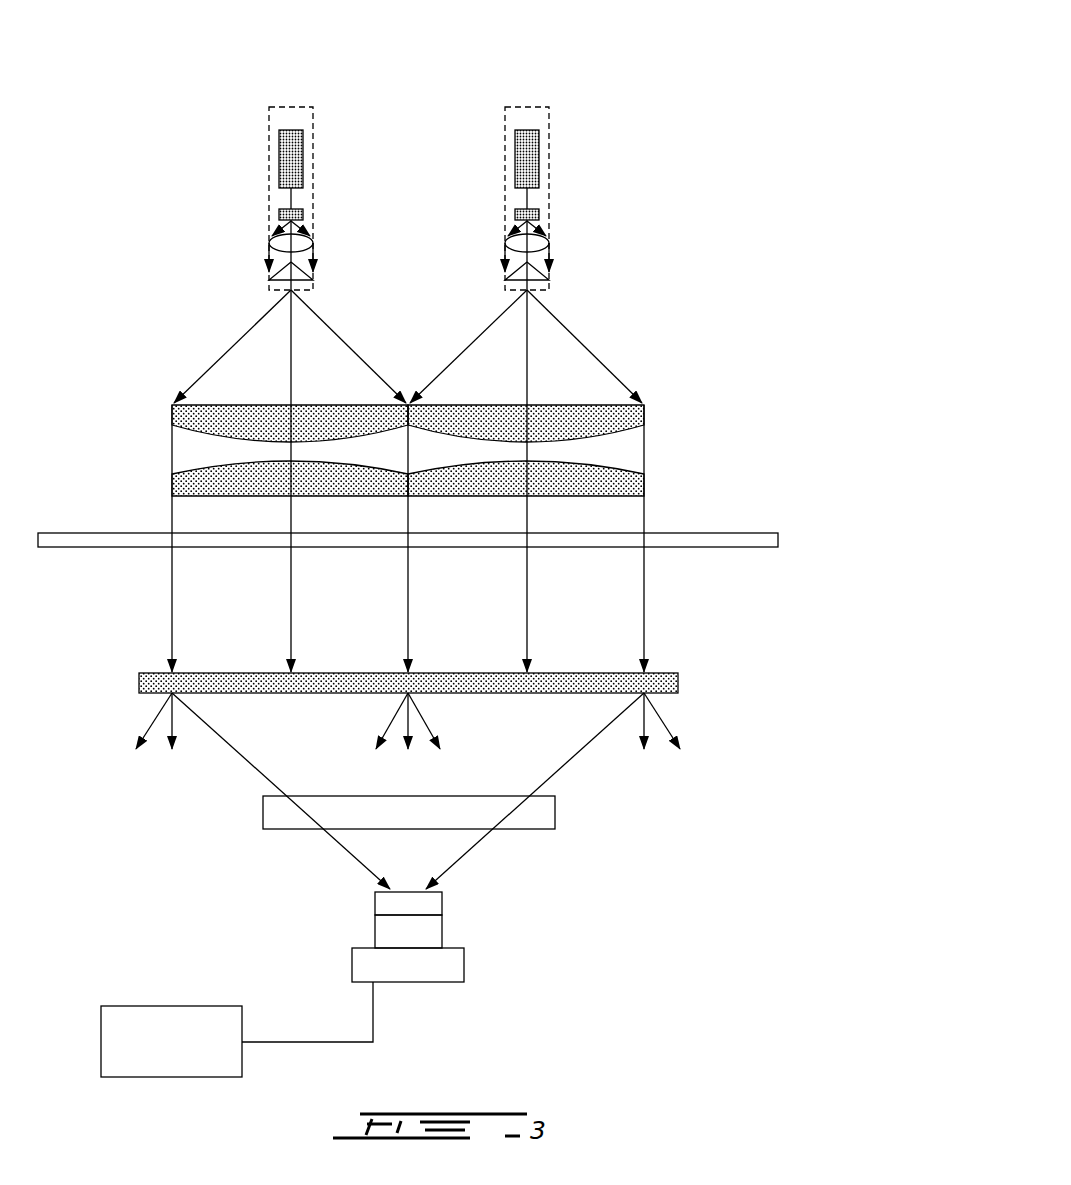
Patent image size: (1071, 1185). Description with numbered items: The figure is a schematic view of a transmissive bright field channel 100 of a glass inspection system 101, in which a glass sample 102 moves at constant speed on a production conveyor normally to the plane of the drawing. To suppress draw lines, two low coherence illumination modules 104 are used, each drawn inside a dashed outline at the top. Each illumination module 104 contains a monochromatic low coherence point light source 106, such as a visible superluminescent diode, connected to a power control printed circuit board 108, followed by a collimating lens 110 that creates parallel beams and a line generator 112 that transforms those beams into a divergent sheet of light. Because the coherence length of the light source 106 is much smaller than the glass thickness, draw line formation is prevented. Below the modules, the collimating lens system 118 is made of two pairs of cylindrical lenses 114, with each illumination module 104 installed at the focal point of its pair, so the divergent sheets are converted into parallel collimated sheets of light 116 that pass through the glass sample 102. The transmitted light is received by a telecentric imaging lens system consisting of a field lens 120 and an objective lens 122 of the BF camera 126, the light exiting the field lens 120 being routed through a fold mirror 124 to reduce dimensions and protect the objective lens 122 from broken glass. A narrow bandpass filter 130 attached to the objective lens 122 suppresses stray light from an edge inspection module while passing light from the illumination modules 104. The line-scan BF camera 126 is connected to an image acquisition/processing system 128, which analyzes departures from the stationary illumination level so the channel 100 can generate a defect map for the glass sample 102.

The Bright Field channel 100 is at (624, 70).
The glass inspection system 101 is at (703, 140).
The glass sample 102 is at (757, 533).
The low coherence illumination module 104 is at (268, 122).
The low coherence point light source 106 is at (279, 214).
The power control printed circuit board 108 is at (279, 160).
The collimating lens 110 is at (269, 245).
The line generator 112 is at (269, 280).
The cylindrical lenses 114 is at (158, 405).
The collimated sheets of light 116 is at (172, 600).
The collimating lens system 118 is at (441, 409).
The field lens 120 is at (139, 683).
The objective lens 122 is at (442, 930).
The fold mirror 124 is at (555, 808).
The BF camera 126 is at (464, 962).
The image acquisition/processing system 128 is at (152, 1077).
The narrow bandpass filter 130 is at (442, 898).